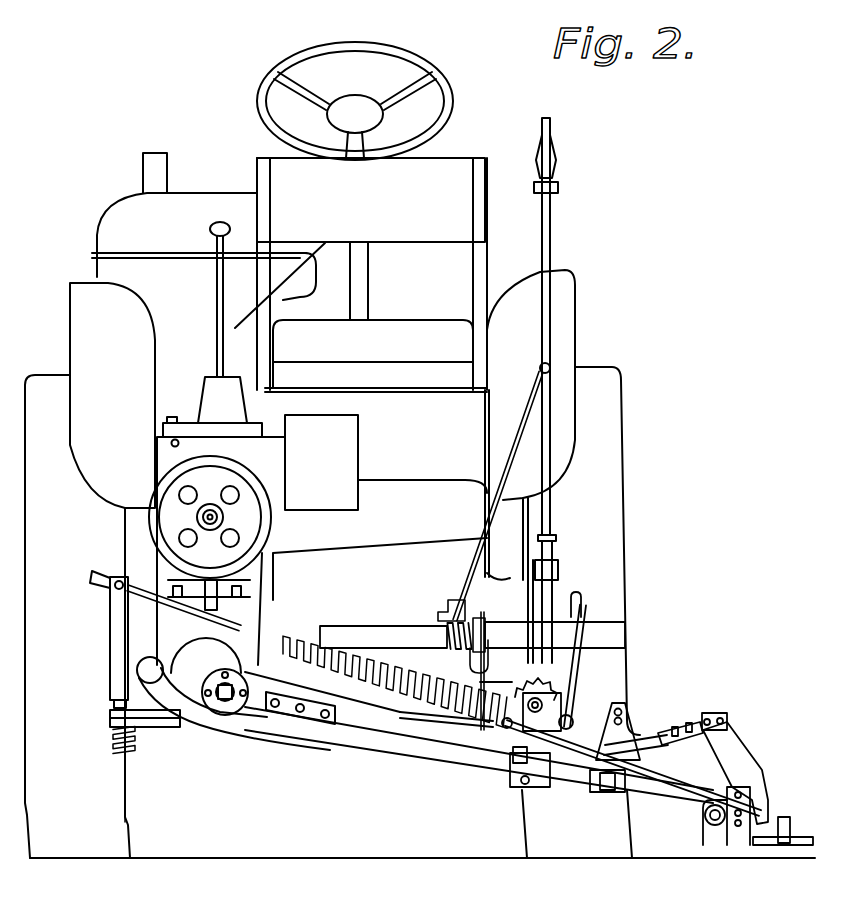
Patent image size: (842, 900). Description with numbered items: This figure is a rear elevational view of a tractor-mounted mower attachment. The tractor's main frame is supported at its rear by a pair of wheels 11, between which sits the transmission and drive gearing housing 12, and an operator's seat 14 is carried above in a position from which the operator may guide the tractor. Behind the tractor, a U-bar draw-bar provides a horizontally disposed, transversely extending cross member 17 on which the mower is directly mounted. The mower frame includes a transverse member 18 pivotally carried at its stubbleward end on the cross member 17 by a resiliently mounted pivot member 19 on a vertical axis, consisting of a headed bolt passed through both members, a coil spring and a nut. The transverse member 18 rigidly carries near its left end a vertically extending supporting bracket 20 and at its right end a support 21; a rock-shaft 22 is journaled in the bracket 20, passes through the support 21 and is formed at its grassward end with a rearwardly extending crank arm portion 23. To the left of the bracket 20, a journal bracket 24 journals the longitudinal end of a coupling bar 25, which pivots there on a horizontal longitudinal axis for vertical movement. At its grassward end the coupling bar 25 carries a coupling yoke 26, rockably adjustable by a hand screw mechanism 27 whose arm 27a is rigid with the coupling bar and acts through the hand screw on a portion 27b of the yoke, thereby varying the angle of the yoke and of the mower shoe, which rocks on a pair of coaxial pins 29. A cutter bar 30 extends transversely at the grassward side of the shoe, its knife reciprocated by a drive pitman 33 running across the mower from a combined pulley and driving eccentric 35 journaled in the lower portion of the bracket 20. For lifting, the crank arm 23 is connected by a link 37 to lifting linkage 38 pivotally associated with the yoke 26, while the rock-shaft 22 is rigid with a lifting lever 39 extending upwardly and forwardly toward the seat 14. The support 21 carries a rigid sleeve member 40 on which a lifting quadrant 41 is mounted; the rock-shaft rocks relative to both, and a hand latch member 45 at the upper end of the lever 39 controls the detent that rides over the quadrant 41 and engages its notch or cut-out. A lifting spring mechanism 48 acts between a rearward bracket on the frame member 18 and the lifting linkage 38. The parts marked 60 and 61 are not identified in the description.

The wheels 11 is at (100, 797).
The transmission and drive gearing housing 12 is at (173, 422).
The operator's seat 14 is at (482, 173).
The cross member 17 is at (428, 723).
The transverse member 18 is at (403, 717).
The pivot member 19 is at (113, 755).
The supporting bracket 20 is at (260, 604).
The support 21 is at (486, 618).
The rock-shaft 22 is at (365, 637).
The crank arm portion 23 is at (579, 597).
The journal bracket 24 is at (110, 645).
The coupling bar 25 is at (262, 730).
The coupling yoke 26 is at (697, 777).
The hand screw mechanism 27 is at (470, 676).
The arm 27a is at (510, 775).
The portion of the coupling yoke 27b is at (555, 690).
The coaxial pins 29 is at (708, 815).
The cutter bar 30 is at (807, 847).
The drive pitman 33 is at (343, 717).
The combined pulley and driving eccentric 35 is at (205, 735).
The link 37 is at (583, 628).
The lifting linkage 38 is at (632, 724).
The lifting lever 39 is at (549, 202).
The sleeve member 40 is at (513, 643).
The lifting quadrant 41 is at (560, 577).
The hand latch member 45 is at (553, 141).
The lifting spring mechanism 48 is at (302, 637).
The pulley 60 is at (247, 527).
The engine support 61 is at (263, 565).